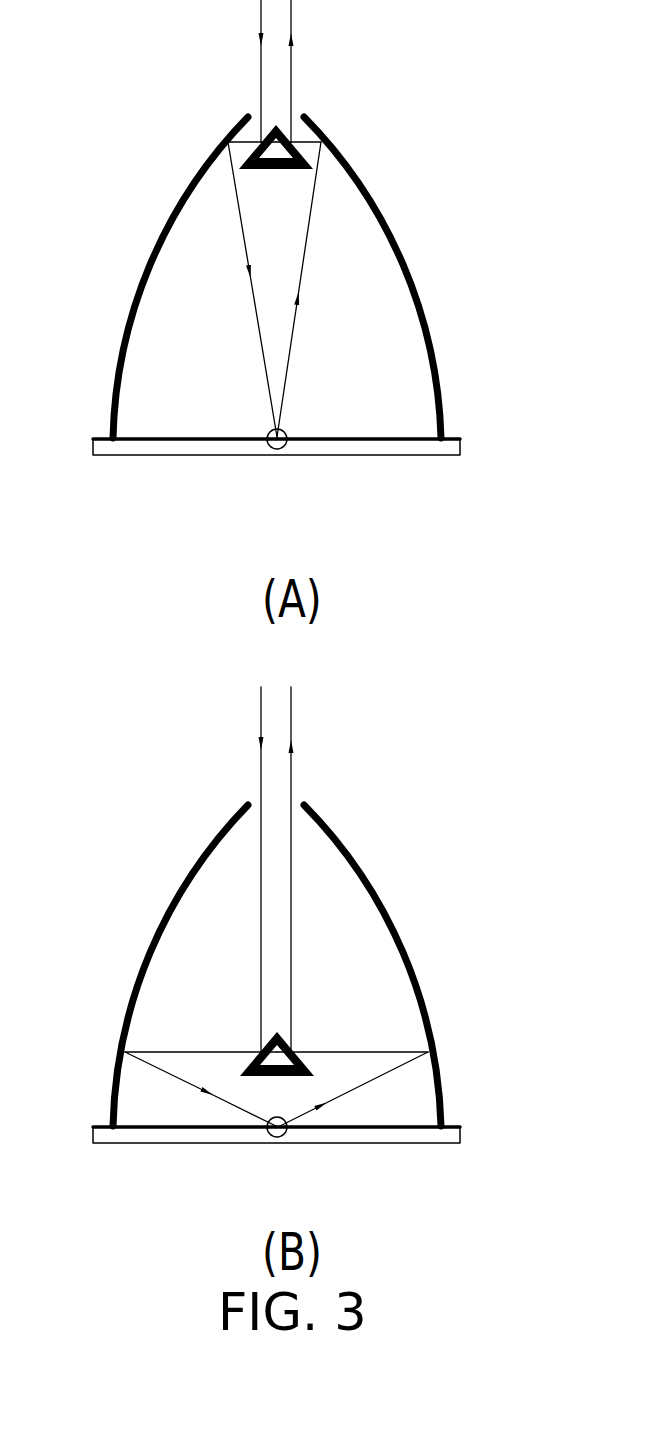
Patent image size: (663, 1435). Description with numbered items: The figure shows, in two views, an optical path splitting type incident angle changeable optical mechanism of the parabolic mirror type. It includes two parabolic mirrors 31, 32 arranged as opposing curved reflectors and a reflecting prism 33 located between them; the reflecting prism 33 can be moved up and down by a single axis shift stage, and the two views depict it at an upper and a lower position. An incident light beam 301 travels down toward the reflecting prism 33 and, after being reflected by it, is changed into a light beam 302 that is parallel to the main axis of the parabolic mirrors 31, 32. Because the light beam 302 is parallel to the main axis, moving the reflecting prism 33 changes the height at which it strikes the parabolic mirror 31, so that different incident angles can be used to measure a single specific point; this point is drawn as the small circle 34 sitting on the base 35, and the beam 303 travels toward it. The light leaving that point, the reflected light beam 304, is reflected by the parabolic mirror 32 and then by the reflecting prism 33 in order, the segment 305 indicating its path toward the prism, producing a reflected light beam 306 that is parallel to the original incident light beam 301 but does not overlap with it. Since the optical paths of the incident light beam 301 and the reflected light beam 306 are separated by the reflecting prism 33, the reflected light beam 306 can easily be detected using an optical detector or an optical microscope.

The parabolic mirror 31 is at (147, 266).
The parabolic mirror 32 is at (405, 266).
The reflecting prism 33 is at (262, 171).
The light source/reflection point 34 is at (280, 452).
The base plate 35 is at (418, 448).
The incident light beam 301 is at (229, 526).
The light beam parallel to the main axis 302 is at (233, 142).
The reflected light ray toward point 34 303 is at (201, 637).
The reflected light beam 304 is at (352, 637).
The right boundary ray segment 305 is at (320, 142).
The reflected light beam 306 is at (325, 526).